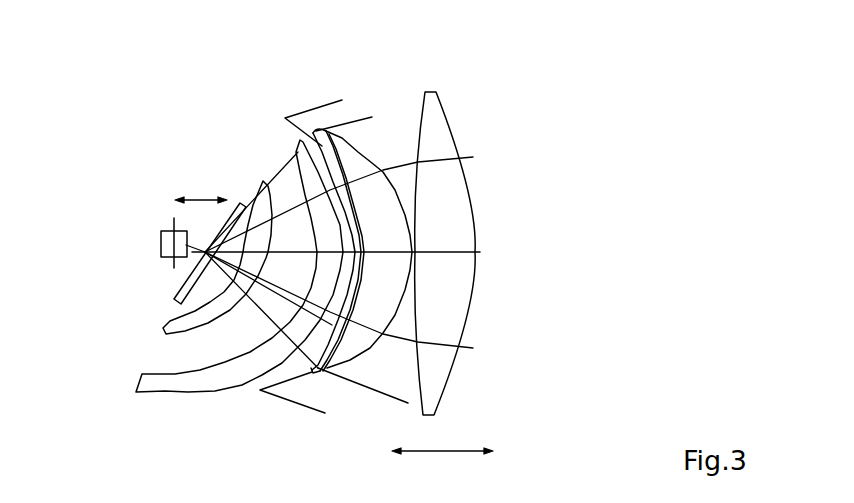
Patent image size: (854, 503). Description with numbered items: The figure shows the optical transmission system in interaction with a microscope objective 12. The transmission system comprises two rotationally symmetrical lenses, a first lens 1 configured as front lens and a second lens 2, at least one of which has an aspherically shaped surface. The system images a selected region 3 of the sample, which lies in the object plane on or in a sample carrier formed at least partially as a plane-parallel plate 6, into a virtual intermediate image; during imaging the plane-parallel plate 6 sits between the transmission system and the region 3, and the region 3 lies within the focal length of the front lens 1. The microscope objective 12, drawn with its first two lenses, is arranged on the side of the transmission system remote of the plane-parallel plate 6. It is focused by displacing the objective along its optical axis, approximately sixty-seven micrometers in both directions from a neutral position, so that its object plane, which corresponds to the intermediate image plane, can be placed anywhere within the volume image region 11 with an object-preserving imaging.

The first lens 1 is at (172, 330).
The second lens 2 is at (183, 382).
The selected region 3 is at (167, 243).
The plane-parallel plate 6 is at (180, 292).
The volume image region 11 is at (175, 221).
The microscope objective 12 is at (313, 98).